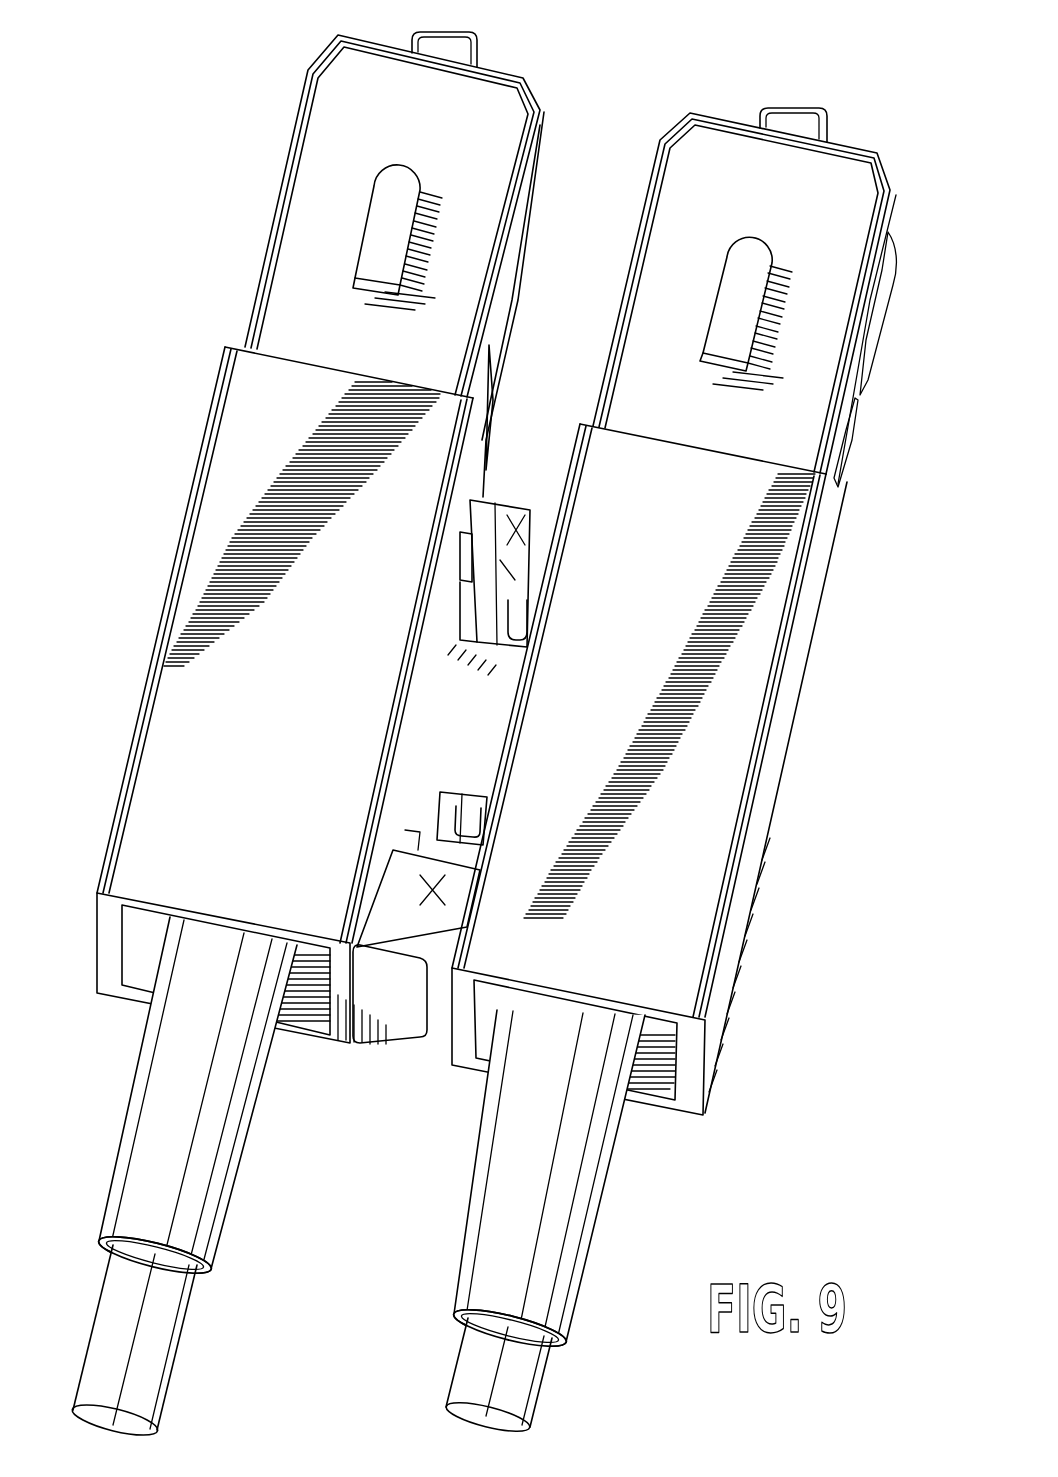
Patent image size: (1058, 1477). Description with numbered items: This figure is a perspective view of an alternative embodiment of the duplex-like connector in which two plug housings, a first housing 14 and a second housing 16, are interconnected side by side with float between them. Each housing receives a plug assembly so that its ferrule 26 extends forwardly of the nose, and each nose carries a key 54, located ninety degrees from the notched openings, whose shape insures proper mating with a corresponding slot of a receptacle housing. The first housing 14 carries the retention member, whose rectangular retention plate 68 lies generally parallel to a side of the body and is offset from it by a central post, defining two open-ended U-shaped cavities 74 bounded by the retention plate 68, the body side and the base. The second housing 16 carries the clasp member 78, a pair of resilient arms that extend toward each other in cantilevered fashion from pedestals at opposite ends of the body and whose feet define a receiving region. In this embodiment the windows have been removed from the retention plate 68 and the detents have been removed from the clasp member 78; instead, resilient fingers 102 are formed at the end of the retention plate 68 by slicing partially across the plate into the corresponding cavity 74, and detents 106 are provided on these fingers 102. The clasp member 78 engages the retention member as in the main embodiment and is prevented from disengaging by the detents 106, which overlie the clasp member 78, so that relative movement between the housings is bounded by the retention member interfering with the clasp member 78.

The first housing 14 is at (797, 683).
The second housing 16 is at (180, 571).
The ferrule 26 is at (455, 47).
The key 54 is at (401, 222).
The retention plate 68 is at (467, 613).
The U-shaped cavities 74 is at (523, 600).
The clasp member 78 is at (400, 967).
The resilient fingers 102 is at (497, 517).
The detents 106 is at (512, 540).